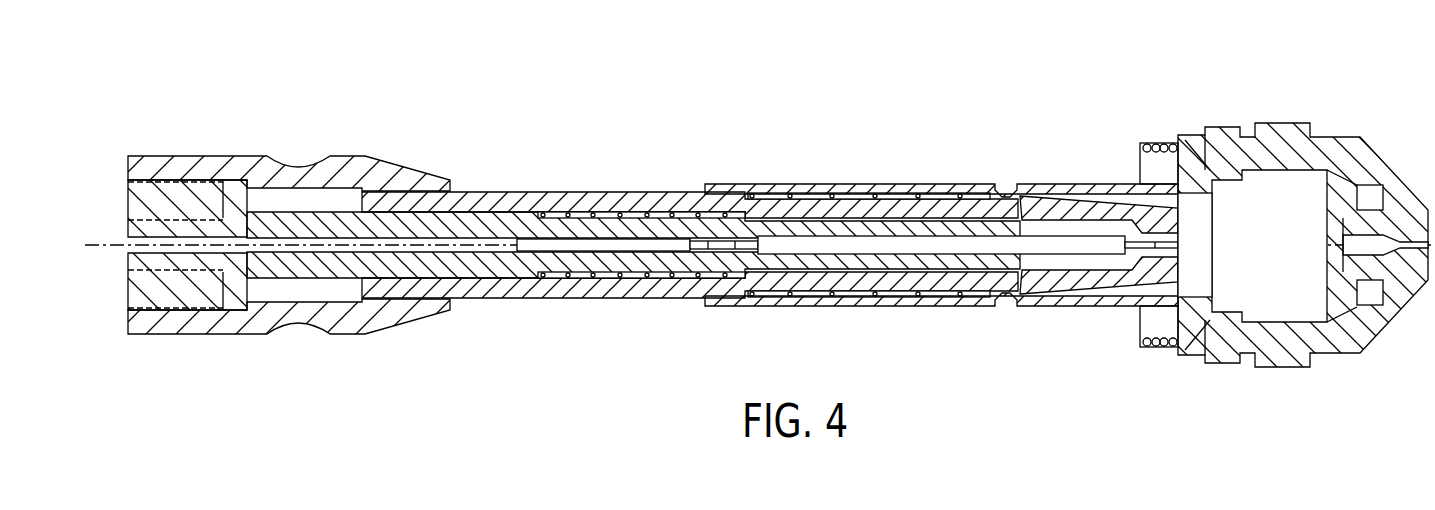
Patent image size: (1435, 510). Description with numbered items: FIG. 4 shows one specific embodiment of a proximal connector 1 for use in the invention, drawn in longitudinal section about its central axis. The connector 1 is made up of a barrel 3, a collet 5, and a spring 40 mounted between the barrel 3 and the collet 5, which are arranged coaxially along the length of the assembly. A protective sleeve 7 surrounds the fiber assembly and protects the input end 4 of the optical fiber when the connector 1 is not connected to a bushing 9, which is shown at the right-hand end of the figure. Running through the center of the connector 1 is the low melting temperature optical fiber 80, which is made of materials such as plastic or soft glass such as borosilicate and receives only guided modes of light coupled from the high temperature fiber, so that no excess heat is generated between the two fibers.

The connector 1 is at (758, 201).
The barrel 3 is at (507, 270).
The input end 4 is at (1128, 250).
The collet 5 is at (617, 288).
The protective sleeve 7 is at (853, 185).
The bushing 9 is at (1292, 110).
The spring 40 is at (660, 275).
The low melting temperature optical fiber 80 is at (617, 238).